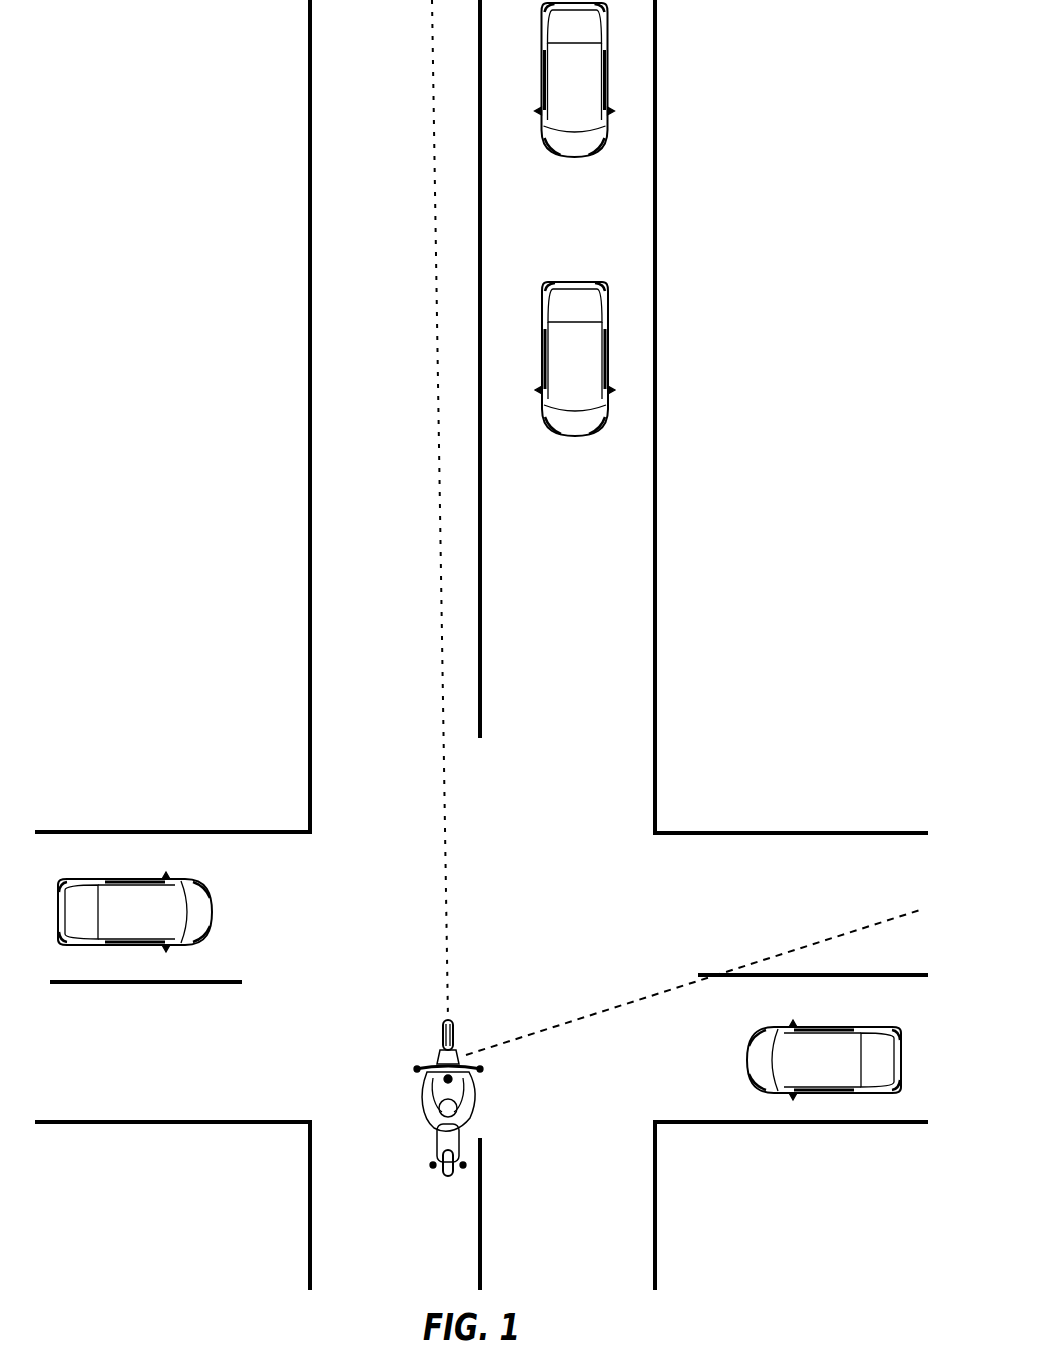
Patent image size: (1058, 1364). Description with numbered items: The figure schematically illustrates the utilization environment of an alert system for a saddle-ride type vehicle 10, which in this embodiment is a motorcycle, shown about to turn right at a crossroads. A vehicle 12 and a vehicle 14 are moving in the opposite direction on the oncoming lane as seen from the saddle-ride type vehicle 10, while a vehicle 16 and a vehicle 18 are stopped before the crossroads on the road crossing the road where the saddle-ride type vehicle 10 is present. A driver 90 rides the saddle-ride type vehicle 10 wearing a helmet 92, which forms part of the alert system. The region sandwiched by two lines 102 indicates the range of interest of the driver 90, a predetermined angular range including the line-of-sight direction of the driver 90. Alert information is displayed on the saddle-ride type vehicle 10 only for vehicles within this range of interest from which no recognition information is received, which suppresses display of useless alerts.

The saddle-ride type vehicle 10 is at (457, 1119).
The vehicle 12 is at (566, 437).
The vehicle 14 is at (566, 158).
The vehicle 16 is at (63, 941).
The vehicle 18 is at (750, 1059).
The driver 90 is at (428, 1116).
The helmet 92 is at (470, 1106).
The lines 102 is at (440, 465).